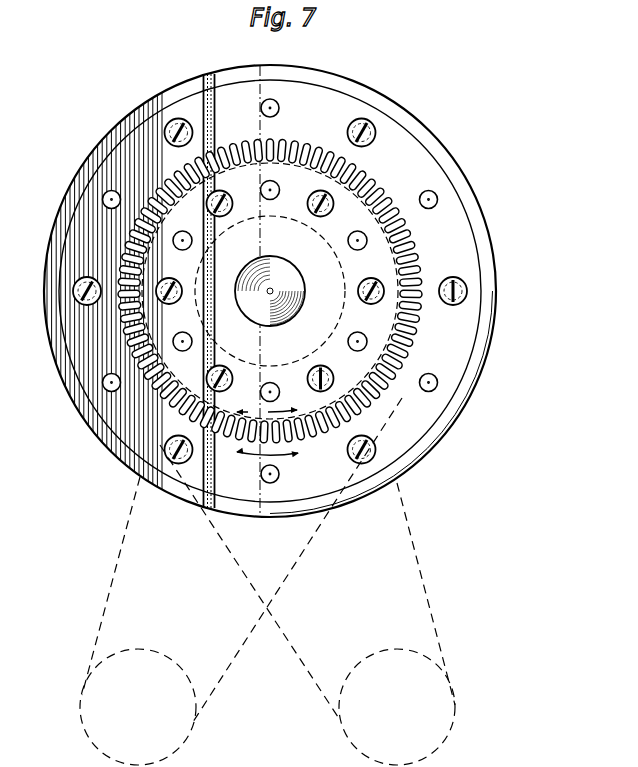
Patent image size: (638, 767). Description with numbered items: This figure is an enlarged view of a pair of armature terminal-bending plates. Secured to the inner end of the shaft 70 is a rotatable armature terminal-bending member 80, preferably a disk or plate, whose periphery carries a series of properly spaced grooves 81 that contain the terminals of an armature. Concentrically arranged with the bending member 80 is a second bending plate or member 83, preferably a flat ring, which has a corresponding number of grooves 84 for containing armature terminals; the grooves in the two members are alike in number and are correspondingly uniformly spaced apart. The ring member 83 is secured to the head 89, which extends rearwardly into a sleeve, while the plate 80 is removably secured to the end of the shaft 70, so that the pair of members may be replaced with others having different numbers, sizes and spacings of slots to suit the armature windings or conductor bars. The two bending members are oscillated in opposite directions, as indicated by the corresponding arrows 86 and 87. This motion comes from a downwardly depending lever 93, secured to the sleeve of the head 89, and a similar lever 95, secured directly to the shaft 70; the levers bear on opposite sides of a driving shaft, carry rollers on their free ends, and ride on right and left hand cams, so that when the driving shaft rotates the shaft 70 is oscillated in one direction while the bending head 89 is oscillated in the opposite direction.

The shaft 70 is at (273, 266).
The armature terminal-bending member 80 is at (377, 263).
The grooves 81 is at (197, 186).
The bending plate or member 83 is at (458, 341).
The grooves 84 is at (412, 340).
The arrow 86 is at (248, 412).
The arrow 87 is at (250, 463).
The head 89 is at (435, 141).
The lever 93 is at (115, 568).
The lever 95 is at (421, 574).